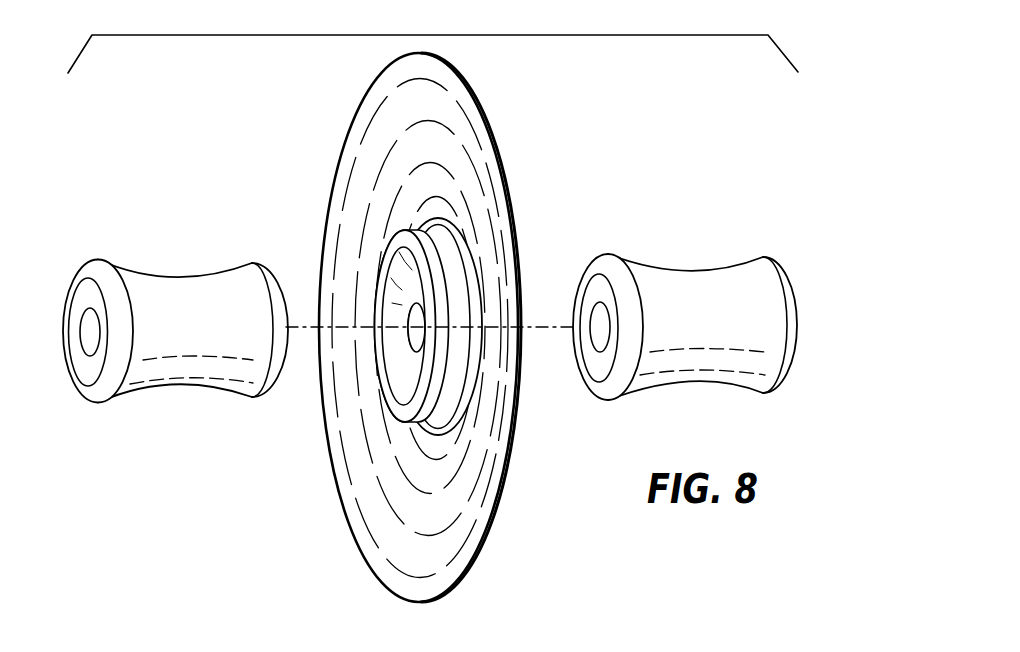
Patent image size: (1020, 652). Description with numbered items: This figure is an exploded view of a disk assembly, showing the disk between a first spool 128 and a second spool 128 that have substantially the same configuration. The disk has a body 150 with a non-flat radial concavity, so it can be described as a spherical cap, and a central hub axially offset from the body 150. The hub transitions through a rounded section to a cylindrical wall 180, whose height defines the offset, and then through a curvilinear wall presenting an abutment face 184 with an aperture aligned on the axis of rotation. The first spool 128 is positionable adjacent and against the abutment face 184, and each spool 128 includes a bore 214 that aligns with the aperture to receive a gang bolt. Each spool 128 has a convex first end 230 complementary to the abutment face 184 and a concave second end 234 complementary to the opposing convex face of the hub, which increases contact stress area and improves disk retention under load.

The body 150 is at (482, 117).
The cylindrical wall 180 is at (441, 413).
The abutment face 184 is at (408, 378).
The spool 128 is at (421, 318).
The first end 230 is at (83, 293).
The second end 234 is at (596, 291).
The bore 214 is at (598, 335).